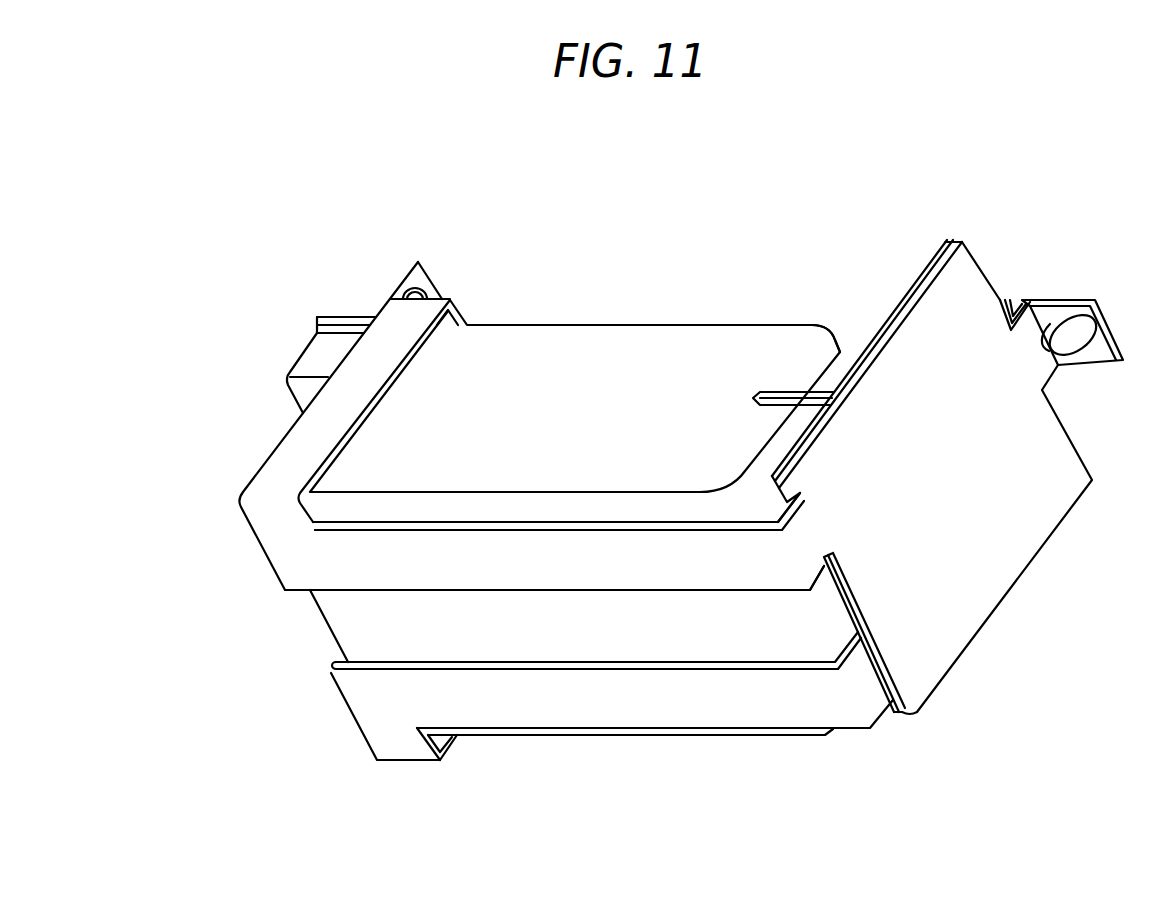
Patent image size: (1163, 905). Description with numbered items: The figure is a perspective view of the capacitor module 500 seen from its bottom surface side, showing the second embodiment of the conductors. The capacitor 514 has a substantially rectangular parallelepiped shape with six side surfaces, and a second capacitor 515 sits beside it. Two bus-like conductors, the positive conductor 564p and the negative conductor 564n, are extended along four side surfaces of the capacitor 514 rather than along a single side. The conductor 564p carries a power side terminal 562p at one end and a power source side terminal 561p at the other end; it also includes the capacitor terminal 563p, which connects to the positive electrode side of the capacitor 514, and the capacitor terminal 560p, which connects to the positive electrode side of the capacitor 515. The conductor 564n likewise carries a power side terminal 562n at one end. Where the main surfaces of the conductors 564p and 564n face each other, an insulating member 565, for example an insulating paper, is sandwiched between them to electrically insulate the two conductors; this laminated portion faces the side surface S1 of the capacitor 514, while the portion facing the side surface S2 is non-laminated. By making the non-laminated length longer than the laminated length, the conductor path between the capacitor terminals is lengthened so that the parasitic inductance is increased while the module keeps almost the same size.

The capacitor module 500 is at (680, 173).
The capacitor 514 is at (652, 352).
The capacitor 515 is at (303, 358).
The capacitor terminal 560p is at (327, 317).
The power source side terminal 561p is at (413, 258).
The power side terminal 562n is at (1010, 297).
The power side terminal 562p is at (1078, 300).
The capacitor terminal 563p is at (775, 387).
The conductor 564p is at (570, 565).
The conductor 564n is at (698, 705).
The insulating member 565 is at (905, 713).
The side surface S1 is at (832, 364).
The side surface S2 is at (360, 628).